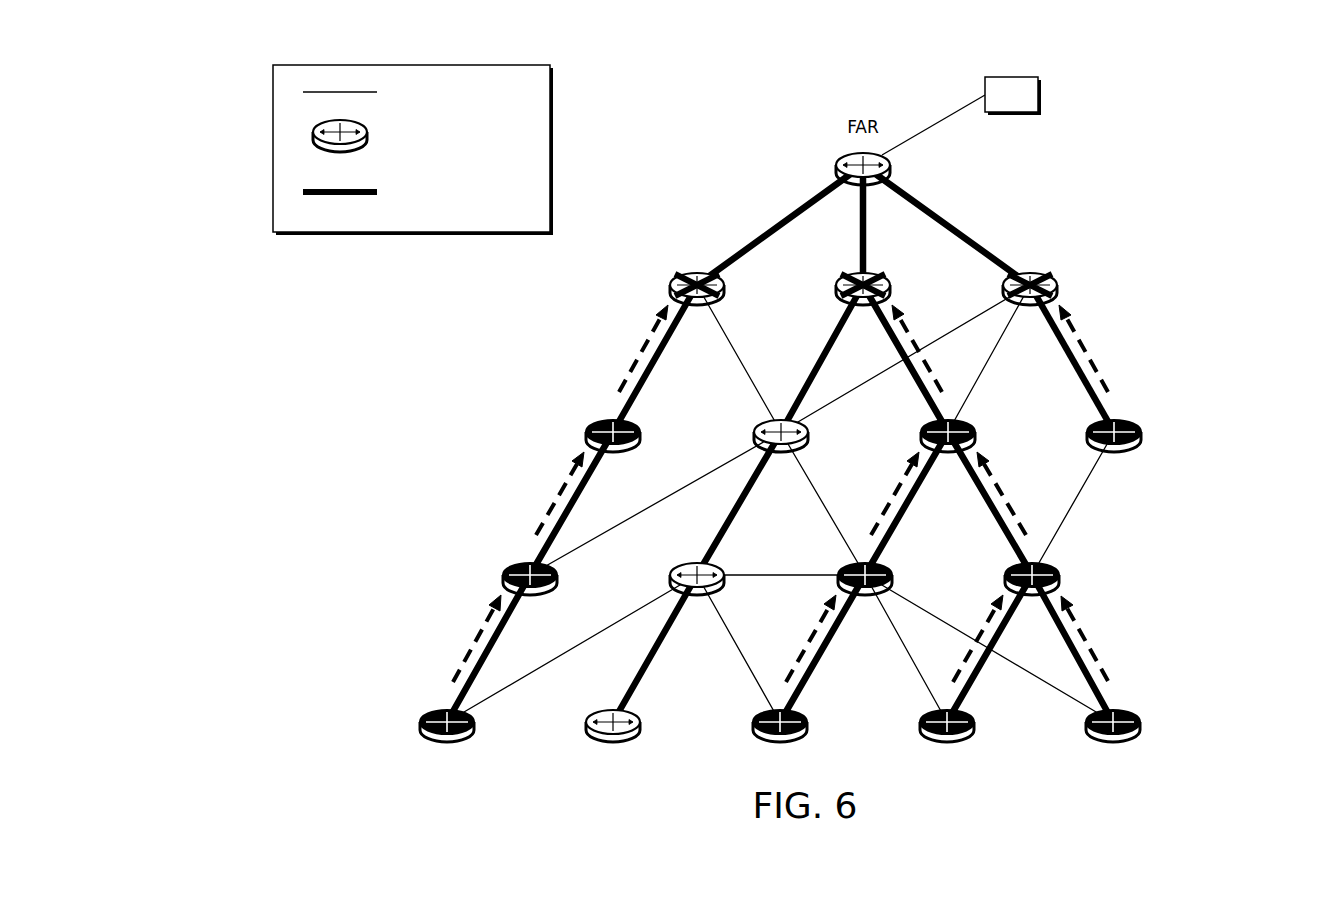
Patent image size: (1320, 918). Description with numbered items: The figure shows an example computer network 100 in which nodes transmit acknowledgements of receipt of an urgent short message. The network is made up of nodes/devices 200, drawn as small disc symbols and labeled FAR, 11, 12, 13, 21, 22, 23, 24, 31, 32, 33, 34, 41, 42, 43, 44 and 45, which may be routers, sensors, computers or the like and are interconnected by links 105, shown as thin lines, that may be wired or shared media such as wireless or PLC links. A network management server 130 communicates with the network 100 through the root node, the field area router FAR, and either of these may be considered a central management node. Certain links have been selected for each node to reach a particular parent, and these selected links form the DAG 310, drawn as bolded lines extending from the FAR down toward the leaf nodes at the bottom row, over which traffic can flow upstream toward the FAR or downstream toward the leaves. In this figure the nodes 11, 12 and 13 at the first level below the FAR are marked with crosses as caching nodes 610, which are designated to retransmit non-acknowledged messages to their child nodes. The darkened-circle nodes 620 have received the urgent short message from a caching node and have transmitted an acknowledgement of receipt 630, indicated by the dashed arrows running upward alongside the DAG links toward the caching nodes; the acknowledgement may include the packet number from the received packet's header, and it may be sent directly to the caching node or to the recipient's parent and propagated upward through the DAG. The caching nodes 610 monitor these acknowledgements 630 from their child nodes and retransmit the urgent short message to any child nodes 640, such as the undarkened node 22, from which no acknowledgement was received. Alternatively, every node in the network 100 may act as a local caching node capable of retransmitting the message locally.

The computer network 100 is at (1250, 121).
The links 105 is at (397, 93).
The nodes/devices 200 is at (403, 136).
The DAG 310 is at (391, 192).
The network management server 130 is at (997, 106).
The caching nodes 610 is at (1070, 292).
The nodes that received the urgent short message 620 is at (1154, 437).
The acknowledgement of receipt 630 is at (1097, 354).
The child nodes from which no acknowledgement was received 640 is at (742, 437).
The node 11 is at (697, 308).
The node 12 is at (863, 308).
The node 13 is at (1030, 308).
The node 21 is at (613, 454).
The node 22 is at (781, 454).
The node 23 is at (948, 454).
The node 24 is at (1114, 454).
The node 31 is at (530, 596).
The node 32 is at (697, 596).
The node 33 is at (865, 596).
The node 34 is at (1032, 596).
The node 41 is at (447, 744).
The node 42 is at (613, 744).
The node 43 is at (780, 744).
The node 44 is at (947, 744).
The node 45 is at (1113, 744).